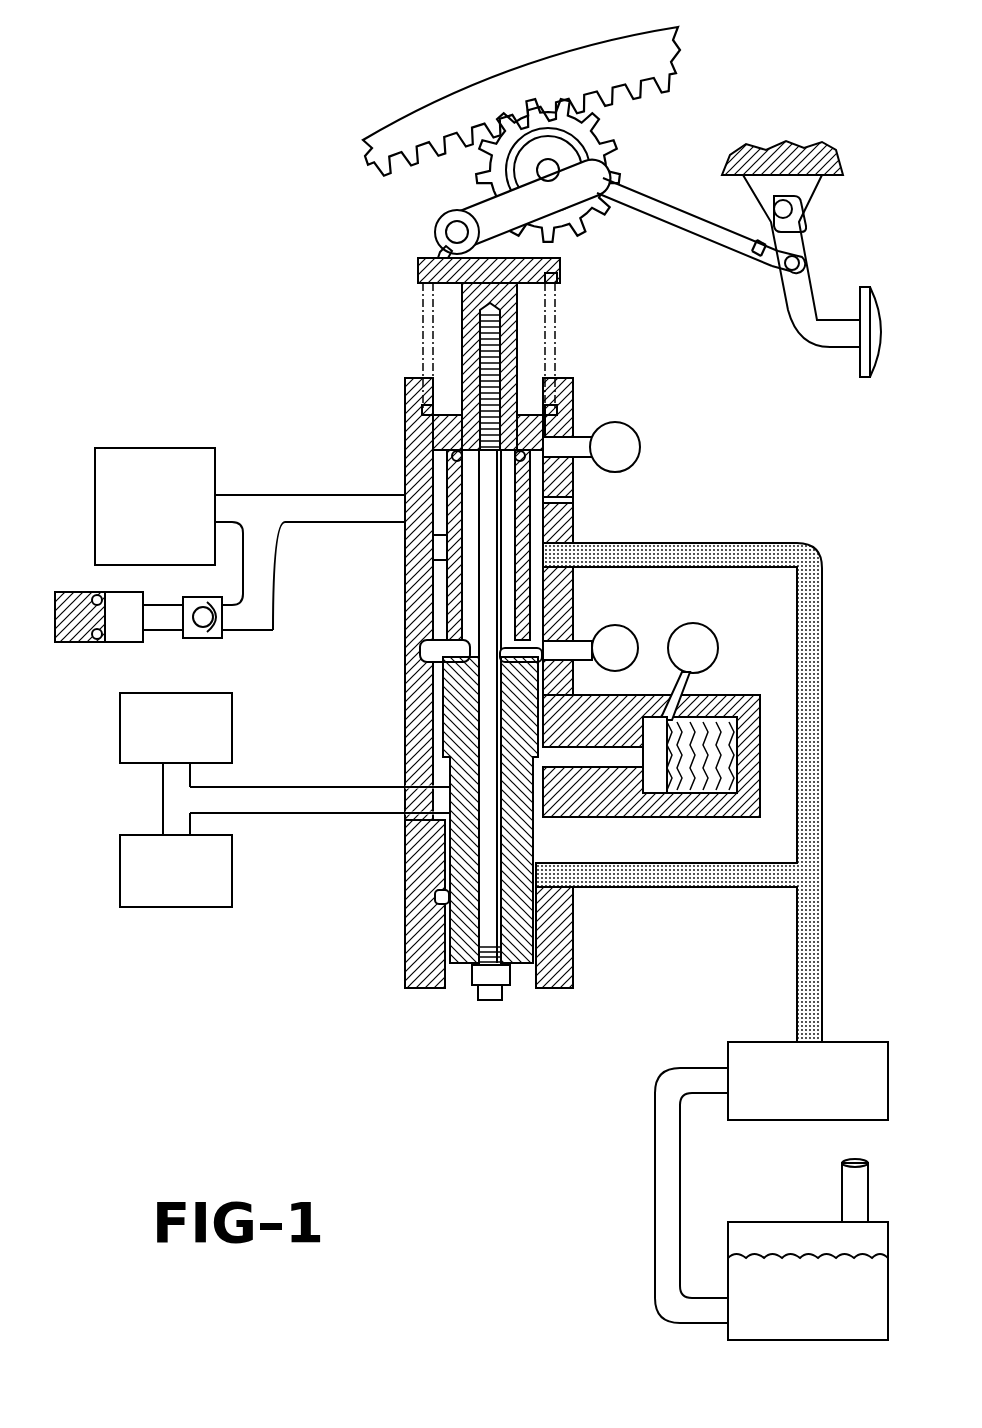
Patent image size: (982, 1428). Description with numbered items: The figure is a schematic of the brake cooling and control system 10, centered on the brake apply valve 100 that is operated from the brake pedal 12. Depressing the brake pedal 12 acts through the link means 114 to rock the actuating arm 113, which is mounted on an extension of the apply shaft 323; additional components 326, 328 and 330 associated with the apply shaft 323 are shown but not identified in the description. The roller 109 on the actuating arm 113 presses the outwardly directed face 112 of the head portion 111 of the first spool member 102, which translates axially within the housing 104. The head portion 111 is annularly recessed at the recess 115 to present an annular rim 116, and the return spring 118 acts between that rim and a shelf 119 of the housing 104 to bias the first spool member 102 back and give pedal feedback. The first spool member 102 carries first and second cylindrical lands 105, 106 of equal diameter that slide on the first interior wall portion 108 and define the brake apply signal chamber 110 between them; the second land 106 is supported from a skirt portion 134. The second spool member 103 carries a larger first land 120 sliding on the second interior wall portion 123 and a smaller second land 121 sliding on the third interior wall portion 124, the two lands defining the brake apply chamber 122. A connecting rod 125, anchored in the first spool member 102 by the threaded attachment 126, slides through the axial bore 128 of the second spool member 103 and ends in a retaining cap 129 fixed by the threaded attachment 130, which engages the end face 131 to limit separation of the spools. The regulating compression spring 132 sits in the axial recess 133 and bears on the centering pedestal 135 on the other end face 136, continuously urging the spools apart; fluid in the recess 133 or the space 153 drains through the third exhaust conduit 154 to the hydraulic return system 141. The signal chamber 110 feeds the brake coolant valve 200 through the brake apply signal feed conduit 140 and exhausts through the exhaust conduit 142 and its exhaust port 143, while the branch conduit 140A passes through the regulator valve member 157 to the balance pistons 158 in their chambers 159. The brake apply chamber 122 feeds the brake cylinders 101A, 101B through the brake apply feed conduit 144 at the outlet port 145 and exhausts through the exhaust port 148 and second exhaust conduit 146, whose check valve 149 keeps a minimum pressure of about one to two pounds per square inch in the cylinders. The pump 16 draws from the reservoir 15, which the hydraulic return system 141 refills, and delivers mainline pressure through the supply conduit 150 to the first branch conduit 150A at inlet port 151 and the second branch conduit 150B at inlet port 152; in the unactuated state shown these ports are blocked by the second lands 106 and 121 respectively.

The brake cooling and control system 10 is at (222, 152).
The brake pedal 12 is at (866, 285).
The reservoir 15 is at (748, 1222).
The pump 16 is at (845, 1042).
The brake apply valve 100 is at (395, 383).
The brake cylinder 101A is at (150, 758).
The brake cylinder 101B is at (150, 900).
The first spool member 102 is at (465, 368).
The second spool member 103 is at (505, 965).
The housing 104 is at (410, 918).
The first cylindrical land 105 is at (440, 422).
The second cylindrical land 106 is at (465, 562).
The first cylindrical interior wall portion 108 is at (432, 552).
The roller 109 is at (443, 222).
The brake apply signal chamber 110 is at (440, 477).
The head portion 111 is at (440, 250).
The outwardly directed face 112 is at (440, 262).
The actuating arm 113 is at (498, 207).
The link means 114 is at (722, 232).
The annular recess 115 is at (553, 298).
The annular rim 116 is at (560, 272).
The return spring 118 is at (558, 342).
The shelf 119 is at (430, 402).
The first cylindrical land 120 is at (460, 718).
The second cylindrical land 121 is at (447, 882).
The brake apply chamber 122 is at (440, 838).
The second cylindrical interior wall portion 123 is at (450, 758).
The third cylindrical interior wall portion 124 is at (452, 960).
The connecting rod 125 is at (447, 462).
The threaded attachment 126 is at (483, 328).
The axial bore 128 is at (520, 928).
The retaining cap 129 is at (512, 985).
The threaded attachment 130 is at (484, 998).
The end face 131 is at (468, 975).
The regulating compression spring 132 is at (430, 655).
The axial recess 133 is at (470, 597).
The skirt portion 134 is at (580, 503).
The centering pedestal 135 is at (432, 642).
The other end face 136 is at (445, 672).
The brake apply signal feed conduit 140 is at (304, 492).
The branch conduit 140A is at (170, 640).
The hydraulic return system 141 is at (625, 452).
The exhaust conduit 142 is at (582, 436).
The exhaust port 143 is at (620, 438).
The brake apply feed conduit 144 is at (266, 800).
The outlet port 145 is at (440, 803).
The second exhaust conduit 146 is at (643, 775).
The exhaust port 148 is at (600, 768).
The check valve 149 is at (690, 740).
The supply conduit 150 is at (822, 968).
The first branch conduit 150A is at (706, 552).
The second branch conduit 150B is at (718, 878).
The inlet port 151 is at (585, 540).
The inlet port 152 is at (580, 880).
The space 153 is at (555, 610).
The third exhaust conduit 154 is at (590, 635).
The regulator valve member 157 is at (212, 640).
The balance piston 158 is at (68, 646).
The chamber 159 is at (125, 598).
The brake coolant valve 200 is at (150, 478).
The apply shaft 323 is at (555, 166).
The gear 326 is at (535, 118).
The teeth 328 is at (622, 86).
The sector gear 330 is at (470, 90).